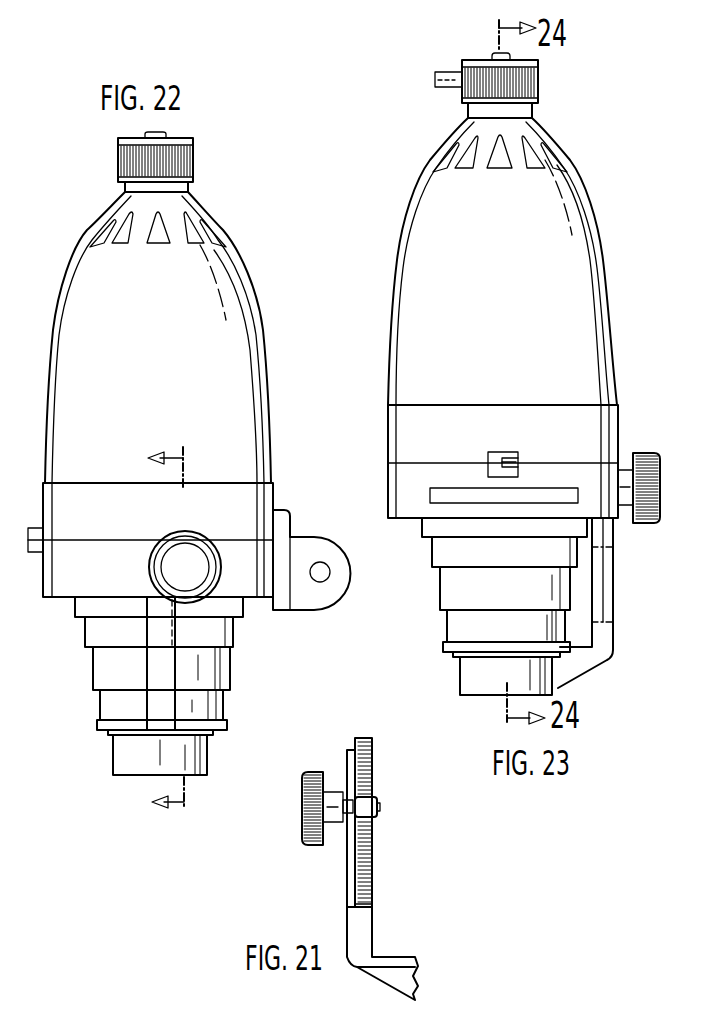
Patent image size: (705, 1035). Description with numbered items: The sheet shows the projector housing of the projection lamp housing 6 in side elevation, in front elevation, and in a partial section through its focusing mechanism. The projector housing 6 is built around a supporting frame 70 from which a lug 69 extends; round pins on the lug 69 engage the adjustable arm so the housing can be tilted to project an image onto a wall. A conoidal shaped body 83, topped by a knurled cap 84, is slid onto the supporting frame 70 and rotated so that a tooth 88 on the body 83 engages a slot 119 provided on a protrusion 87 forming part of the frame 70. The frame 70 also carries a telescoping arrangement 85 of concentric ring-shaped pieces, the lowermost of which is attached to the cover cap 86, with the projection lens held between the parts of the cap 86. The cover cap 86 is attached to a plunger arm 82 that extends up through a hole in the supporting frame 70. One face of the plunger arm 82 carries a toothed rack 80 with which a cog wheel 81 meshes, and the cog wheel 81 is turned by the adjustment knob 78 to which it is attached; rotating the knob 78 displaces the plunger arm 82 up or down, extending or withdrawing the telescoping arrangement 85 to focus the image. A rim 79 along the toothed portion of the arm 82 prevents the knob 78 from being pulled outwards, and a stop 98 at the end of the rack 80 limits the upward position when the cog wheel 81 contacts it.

In FIG. 22, the projection lamp housing 6 is at (40, 381).
In FIG. 22, the lug 69 is at (327, 547).
In FIG. 22, the supporting frame 70 is at (70, 572).
In FIG. 23, the adjustment knob 78 is at (643, 480).
In FIG. 21, the adjustment knob 78 is at (333, 795).
In FIG. 21, the rim 79 is at (350, 756).
In FIG. 21, the toothed rack 80 is at (371, 760).
In FIG. 21, the cog wheel 81 is at (376, 800).
In FIG. 22, the plunger arm 82 is at (160, 658).
In FIG. 23, the plunger arm 82 is at (602, 594).
In FIG. 21, the plunger arm 82 is at (381, 856).
In FIG. 22, the conoidal shaped body 83 is at (79, 307).
In FIG. 22, the cap 84 is at (135, 165).
In FIG. 22, the telescoping arrangement 85 is at (243, 674).
In FIG. 22, the cover cap 86 is at (205, 761).
In FIG. 23, the cover cap 86 is at (480, 680).
In FIG. 23, the protrusion 87 is at (495, 460).
In FIG. 23, the tooth 88 is at (518, 461).
In FIG. 21, the stop 98 is at (360, 897).
In FIG. 23, the slot 119 is at (520, 468).